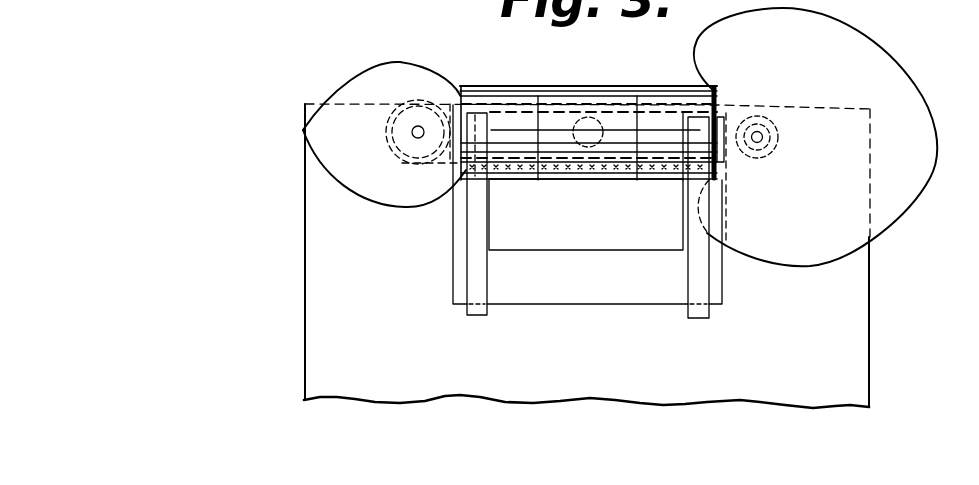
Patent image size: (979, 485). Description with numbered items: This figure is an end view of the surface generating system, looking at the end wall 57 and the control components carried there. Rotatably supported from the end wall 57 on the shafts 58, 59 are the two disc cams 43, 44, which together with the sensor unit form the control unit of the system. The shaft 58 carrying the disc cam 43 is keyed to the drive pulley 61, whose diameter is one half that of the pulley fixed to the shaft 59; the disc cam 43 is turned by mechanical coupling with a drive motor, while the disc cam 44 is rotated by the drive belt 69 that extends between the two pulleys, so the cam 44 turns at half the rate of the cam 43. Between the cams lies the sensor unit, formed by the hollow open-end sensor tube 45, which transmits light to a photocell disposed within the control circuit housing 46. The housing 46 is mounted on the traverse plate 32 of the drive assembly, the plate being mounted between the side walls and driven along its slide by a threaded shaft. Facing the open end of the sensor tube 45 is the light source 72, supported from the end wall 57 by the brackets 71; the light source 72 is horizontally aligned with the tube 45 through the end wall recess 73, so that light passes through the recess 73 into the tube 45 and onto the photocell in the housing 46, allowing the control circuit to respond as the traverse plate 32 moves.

The traverse plate 32 is at (593, 237).
The disc cam 43 is at (862, 48).
The disc cam 44 is at (398, 67).
The sensor tube 45 is at (607, 158).
The control circuit housing 46 is at (583, 103).
The end wall 57 is at (323, 179).
The shaft 58 is at (763, 142).
The shaft 59 is at (416, 134).
The drive pulley 61 is at (772, 125).
The drive belt 69 is at (723, 117).
The brackets 71 is at (480, 216).
The light source 72 is at (660, 100).
The end wall recess 73 is at (628, 303).